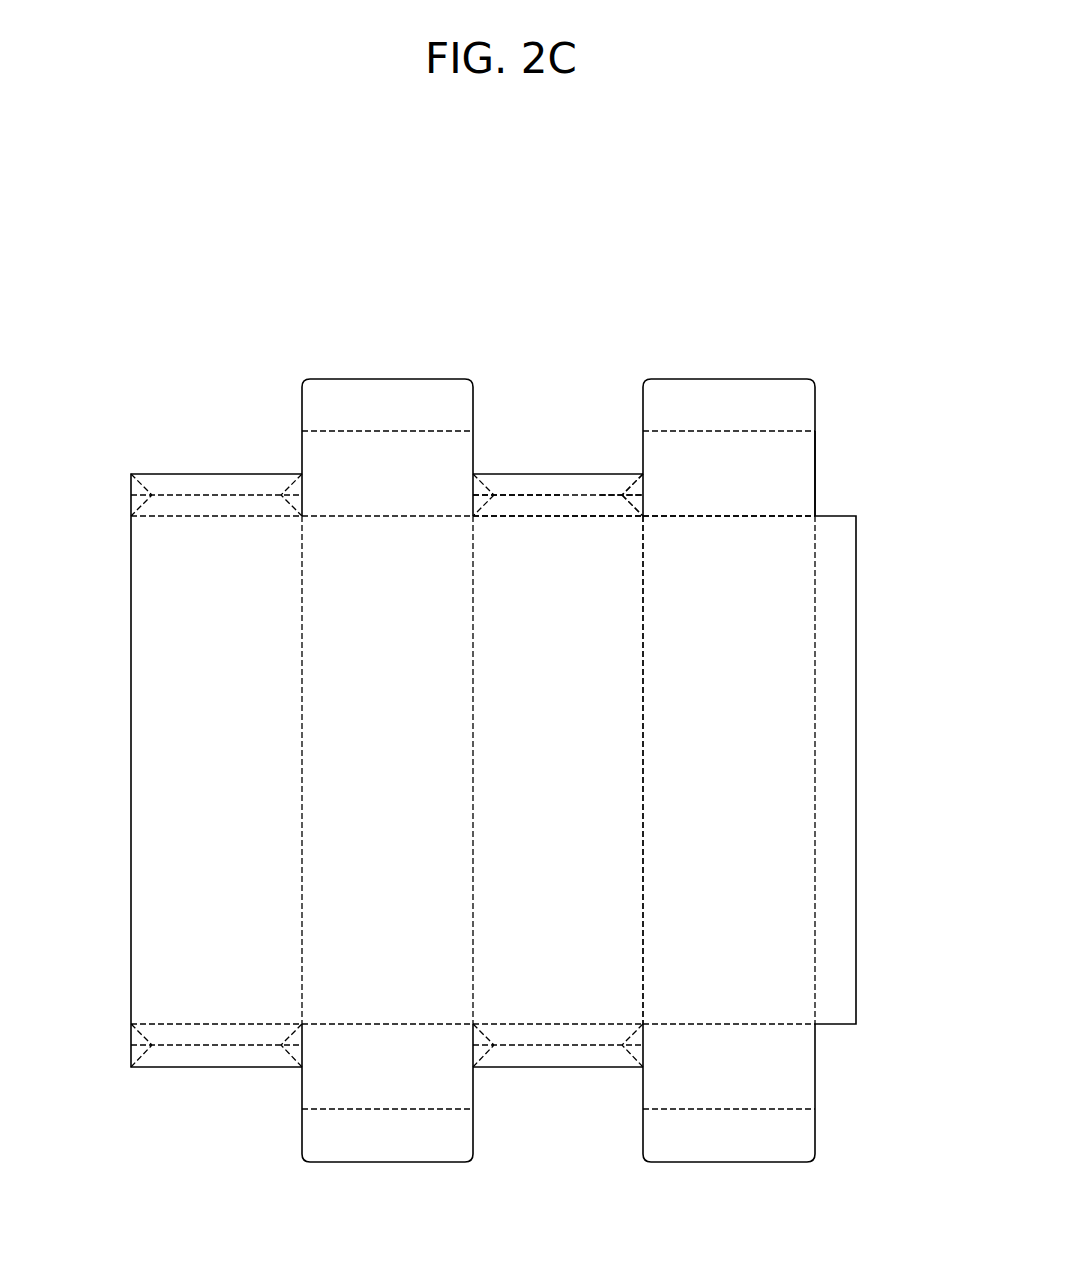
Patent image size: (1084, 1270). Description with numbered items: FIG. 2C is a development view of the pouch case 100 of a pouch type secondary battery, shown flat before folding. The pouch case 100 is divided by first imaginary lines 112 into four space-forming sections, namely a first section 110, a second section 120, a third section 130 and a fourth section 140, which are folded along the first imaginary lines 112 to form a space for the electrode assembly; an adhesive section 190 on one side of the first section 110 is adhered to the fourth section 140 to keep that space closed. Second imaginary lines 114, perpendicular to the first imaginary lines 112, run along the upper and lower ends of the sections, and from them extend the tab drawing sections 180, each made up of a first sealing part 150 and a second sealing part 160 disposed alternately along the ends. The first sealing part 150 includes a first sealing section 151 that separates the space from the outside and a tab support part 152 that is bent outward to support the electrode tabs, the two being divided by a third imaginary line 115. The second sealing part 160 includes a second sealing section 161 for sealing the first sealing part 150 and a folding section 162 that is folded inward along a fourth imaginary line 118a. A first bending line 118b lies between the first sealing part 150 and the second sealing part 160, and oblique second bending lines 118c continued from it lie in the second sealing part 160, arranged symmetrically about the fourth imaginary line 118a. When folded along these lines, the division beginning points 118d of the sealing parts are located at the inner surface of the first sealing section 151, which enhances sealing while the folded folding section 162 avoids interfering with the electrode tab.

The pouch case 100 is at (92, 158).
The first section 110 is at (795, 792).
The first imaginary lines 112 is at (650, 692).
The second imaginary lines 114 is at (793, 512).
The third imaginary line 115 is at (795, 447).
The fourth imaginary line 118a is at (557, 497).
The first bending line 118b is at (647, 505).
The second bending lines 118c is at (632, 502).
The division beginning points 118d is at (645, 473).
The second section 120 is at (628, 893).
The third section 130 is at (317, 897).
The fourth section 140 is at (147, 788).
The first sealing part 150 is at (787, 296).
The first sealing section 151 is at (770, 442).
The tab support part 152 is at (680, 388).
The second sealing part 160 is at (623, 296).
The second sealing section 161 is at (602, 505).
The folding section 162 is at (513, 487).
The tab drawing section 180 is at (747, 246).
The adhesive section 190 is at (843, 643).